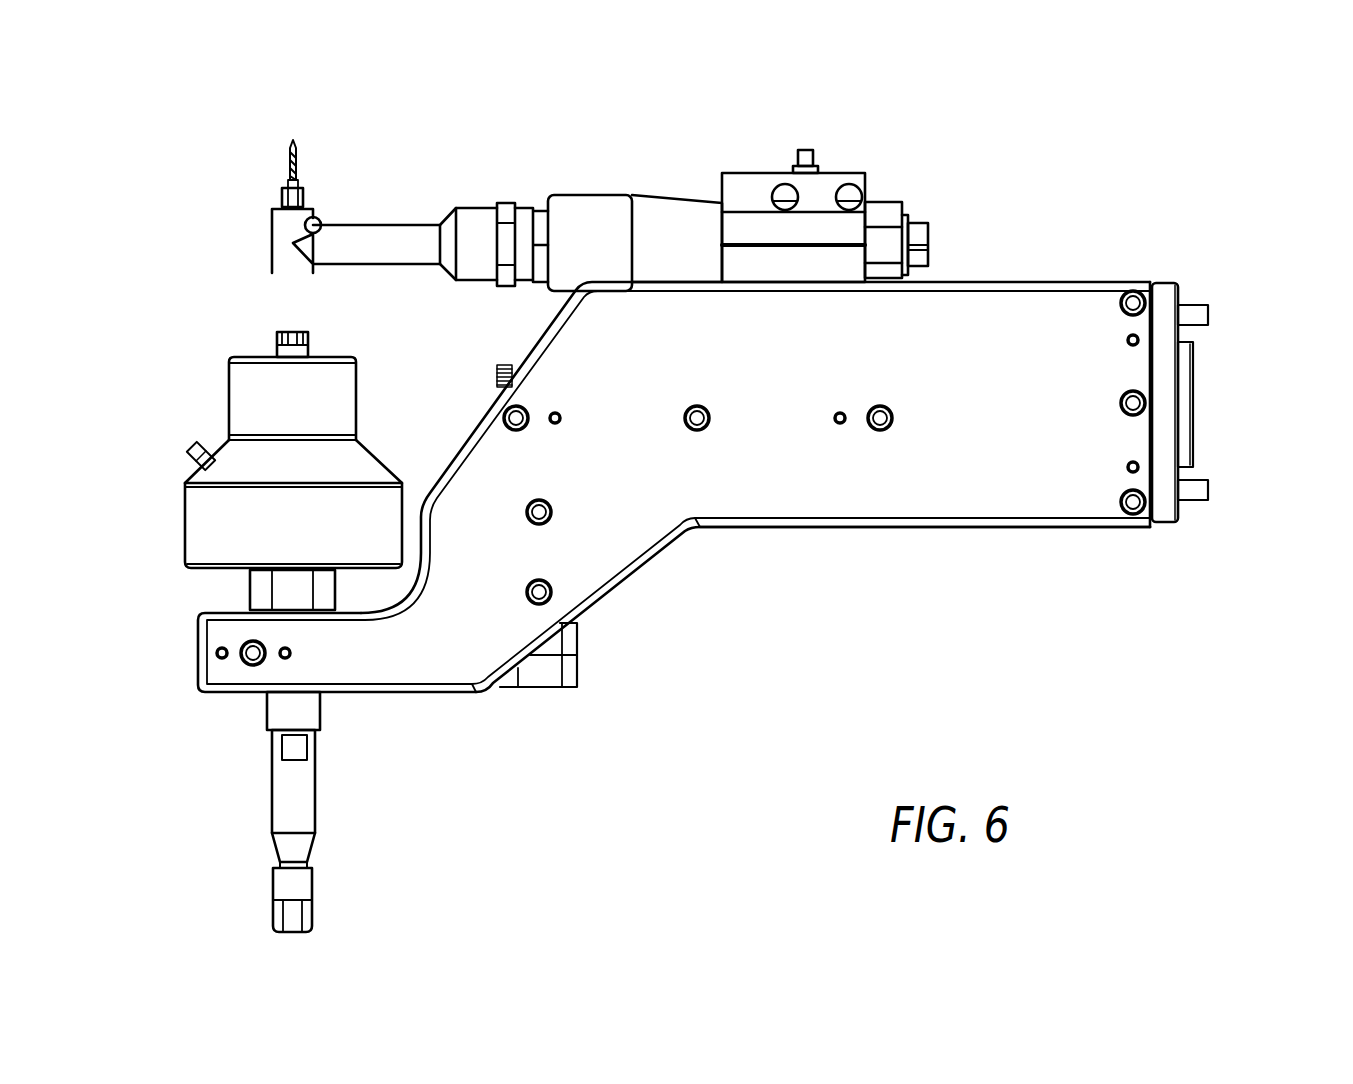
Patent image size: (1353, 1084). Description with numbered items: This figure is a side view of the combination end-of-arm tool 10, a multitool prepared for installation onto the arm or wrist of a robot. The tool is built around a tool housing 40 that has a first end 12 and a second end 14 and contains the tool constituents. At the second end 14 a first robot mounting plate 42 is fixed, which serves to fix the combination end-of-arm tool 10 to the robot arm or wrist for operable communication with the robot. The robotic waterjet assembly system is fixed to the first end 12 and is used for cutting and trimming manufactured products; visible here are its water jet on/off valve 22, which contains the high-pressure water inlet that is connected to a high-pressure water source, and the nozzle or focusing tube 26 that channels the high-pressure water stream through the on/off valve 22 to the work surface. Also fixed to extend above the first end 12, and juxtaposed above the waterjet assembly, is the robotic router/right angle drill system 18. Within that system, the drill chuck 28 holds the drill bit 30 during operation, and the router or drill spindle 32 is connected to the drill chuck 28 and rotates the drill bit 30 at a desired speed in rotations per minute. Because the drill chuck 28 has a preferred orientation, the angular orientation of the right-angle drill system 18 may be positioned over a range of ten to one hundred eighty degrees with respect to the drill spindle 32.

The combination end-of-arm tool 10 is at (978, 118).
The first end 12 is at (360, 705).
The second end 14 is at (963, 480).
The robotic router/right angle drill system 18 is at (380, 195).
The water jet on/off valve 22 is at (182, 500).
The nozzle or focusing tube 26 is at (267, 790).
The drill chuck 28 is at (273, 232).
The drill bit 30 is at (290, 155).
The router or drill spindle 32 is at (503, 207).
The tool housing 40 is at (678, 480).
The first robot mounting plate 42 is at (1202, 400).